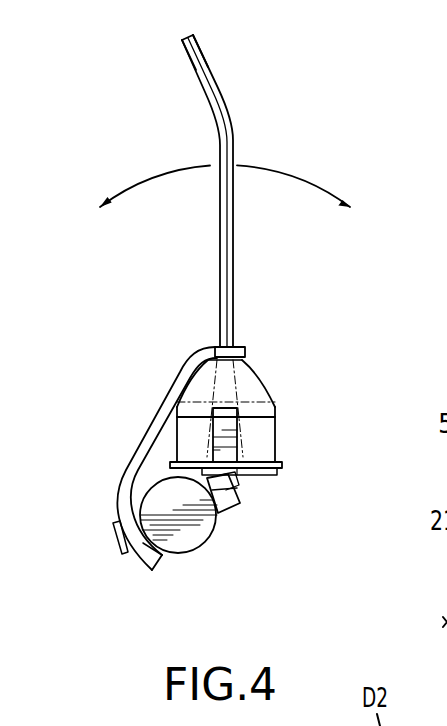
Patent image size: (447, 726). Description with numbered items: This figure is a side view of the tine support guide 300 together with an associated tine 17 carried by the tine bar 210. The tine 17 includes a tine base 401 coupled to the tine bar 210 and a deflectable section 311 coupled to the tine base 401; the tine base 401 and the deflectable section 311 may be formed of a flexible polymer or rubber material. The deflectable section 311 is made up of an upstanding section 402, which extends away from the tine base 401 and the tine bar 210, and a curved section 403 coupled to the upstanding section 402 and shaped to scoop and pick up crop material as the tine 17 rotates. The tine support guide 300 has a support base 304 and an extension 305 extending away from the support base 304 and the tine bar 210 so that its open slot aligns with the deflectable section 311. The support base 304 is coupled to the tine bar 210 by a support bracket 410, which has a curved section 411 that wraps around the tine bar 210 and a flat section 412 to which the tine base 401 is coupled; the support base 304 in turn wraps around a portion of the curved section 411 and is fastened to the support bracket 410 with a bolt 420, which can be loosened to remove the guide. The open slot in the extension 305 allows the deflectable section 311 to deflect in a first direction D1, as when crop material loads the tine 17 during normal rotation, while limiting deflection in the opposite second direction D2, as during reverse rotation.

The tine 17 is at (274, 381).
The tine bar 210 is at (200, 520).
The tine support guide 300 is at (180, 490).
The support base 304 is at (115, 518).
The extension 305 is at (143, 440).
The deflectable section 311 is at (232, 318).
The tine base 401 is at (273, 426).
The upstanding section 402 is at (220, 245).
The curved section 403 is at (198, 71).
The support bracket 410 is at (163, 556).
The curved section 411 is at (153, 495).
The flat section 412 is at (278, 471).
The bolt 420 is at (229, 493).
The first direction D1 is at (280, 172).
The second direction D2 is at (157, 173).